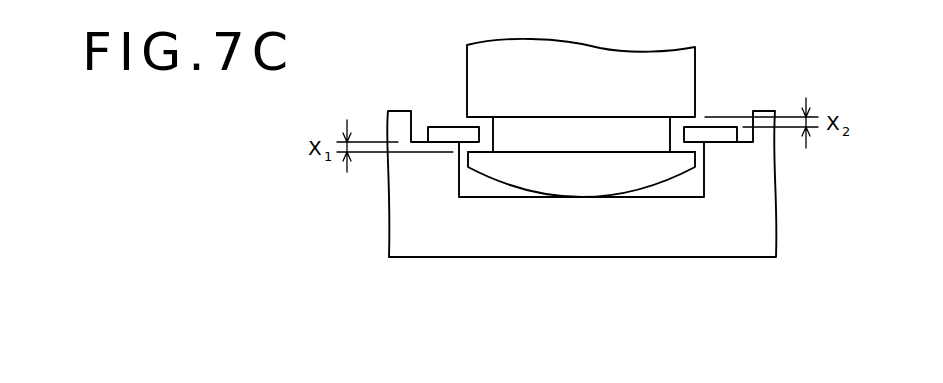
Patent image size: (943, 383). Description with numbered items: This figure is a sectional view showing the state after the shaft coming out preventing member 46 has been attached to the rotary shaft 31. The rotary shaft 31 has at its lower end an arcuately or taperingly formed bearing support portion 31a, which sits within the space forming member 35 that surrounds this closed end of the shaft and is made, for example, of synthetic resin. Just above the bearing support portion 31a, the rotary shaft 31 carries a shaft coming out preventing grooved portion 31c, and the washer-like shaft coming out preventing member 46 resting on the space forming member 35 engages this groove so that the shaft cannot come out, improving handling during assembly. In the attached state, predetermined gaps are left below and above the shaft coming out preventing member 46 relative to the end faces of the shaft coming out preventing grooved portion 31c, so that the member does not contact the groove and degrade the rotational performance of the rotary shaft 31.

The rotary shaft 31 is at (684, 62).
The bearing support portion 31a is at (530, 180).
The shaft coming out preventing grooved portion 31c is at (653, 133).
The space forming member 35 is at (658, 242).
The shaft coming out preventing member 46 is at (722, 133).